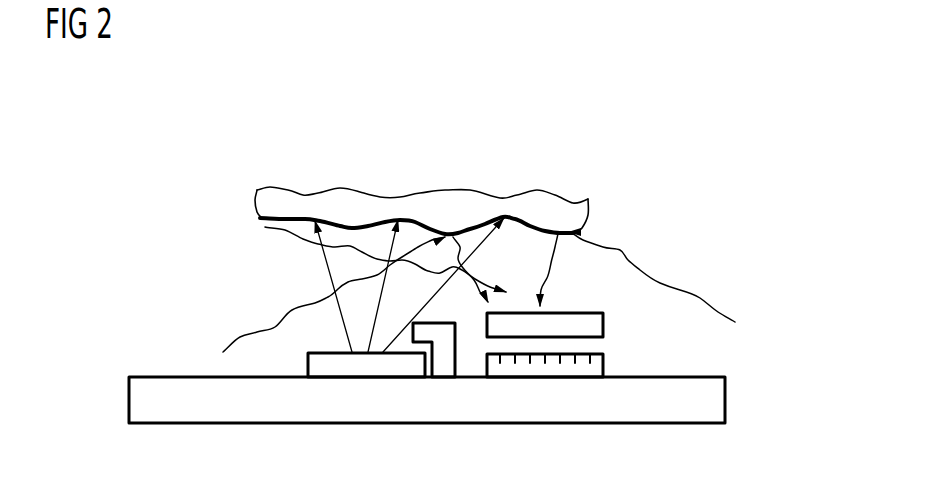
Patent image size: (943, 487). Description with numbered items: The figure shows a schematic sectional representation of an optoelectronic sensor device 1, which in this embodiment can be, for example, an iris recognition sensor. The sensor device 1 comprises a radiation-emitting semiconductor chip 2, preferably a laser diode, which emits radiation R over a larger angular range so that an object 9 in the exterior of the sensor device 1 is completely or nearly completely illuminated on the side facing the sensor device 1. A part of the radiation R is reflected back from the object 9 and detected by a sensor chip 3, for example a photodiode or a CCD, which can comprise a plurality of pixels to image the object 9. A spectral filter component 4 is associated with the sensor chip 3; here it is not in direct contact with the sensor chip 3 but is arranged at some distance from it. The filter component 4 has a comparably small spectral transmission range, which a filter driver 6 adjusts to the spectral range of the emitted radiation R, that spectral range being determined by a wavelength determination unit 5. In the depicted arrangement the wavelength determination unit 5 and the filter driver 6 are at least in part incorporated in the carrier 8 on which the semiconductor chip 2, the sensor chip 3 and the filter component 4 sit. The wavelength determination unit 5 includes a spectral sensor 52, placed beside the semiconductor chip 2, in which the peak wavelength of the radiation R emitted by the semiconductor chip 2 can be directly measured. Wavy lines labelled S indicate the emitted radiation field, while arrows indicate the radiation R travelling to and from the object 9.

The optoelectronic sensor device 1 is at (730, 162).
The radiation-emitting semiconductor chip 2 is at (308, 358).
The sensor chip 3 is at (604, 363).
The spectral filter component 4 is at (604, 325).
The wavelength determination unit 5 is at (467, 400).
The filter driver 6 is at (467, 400).
The carrier 8 is at (726, 398).
The object 9 is at (419, 200).
The spectral sensor 52 is at (455, 357).
The radiation R is at (343, 281).
The sound waves S is at (262, 330).